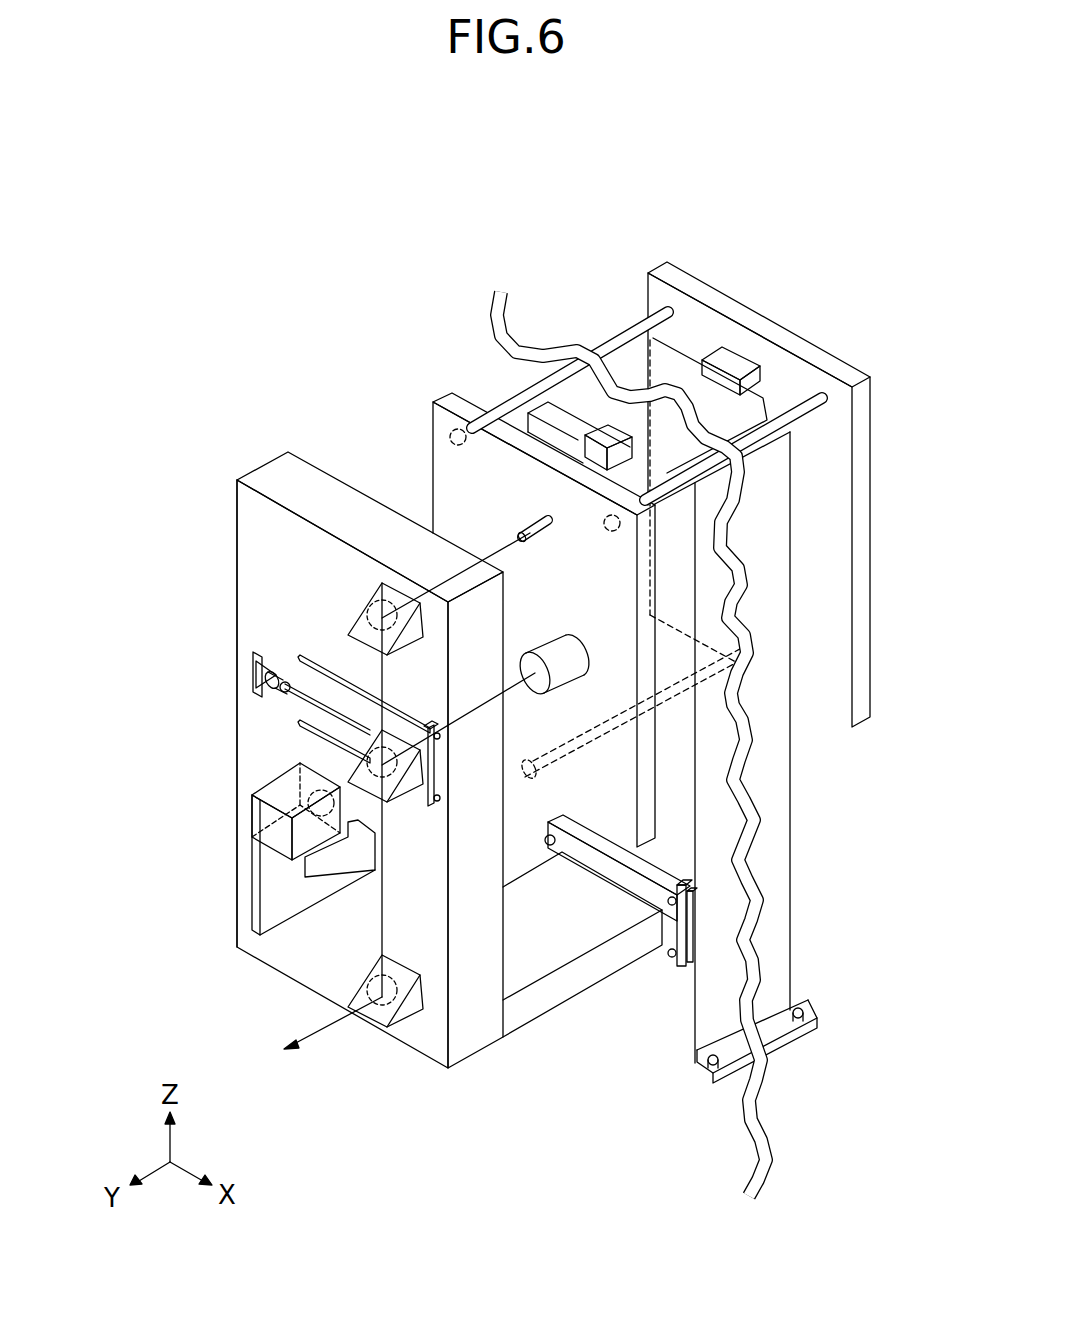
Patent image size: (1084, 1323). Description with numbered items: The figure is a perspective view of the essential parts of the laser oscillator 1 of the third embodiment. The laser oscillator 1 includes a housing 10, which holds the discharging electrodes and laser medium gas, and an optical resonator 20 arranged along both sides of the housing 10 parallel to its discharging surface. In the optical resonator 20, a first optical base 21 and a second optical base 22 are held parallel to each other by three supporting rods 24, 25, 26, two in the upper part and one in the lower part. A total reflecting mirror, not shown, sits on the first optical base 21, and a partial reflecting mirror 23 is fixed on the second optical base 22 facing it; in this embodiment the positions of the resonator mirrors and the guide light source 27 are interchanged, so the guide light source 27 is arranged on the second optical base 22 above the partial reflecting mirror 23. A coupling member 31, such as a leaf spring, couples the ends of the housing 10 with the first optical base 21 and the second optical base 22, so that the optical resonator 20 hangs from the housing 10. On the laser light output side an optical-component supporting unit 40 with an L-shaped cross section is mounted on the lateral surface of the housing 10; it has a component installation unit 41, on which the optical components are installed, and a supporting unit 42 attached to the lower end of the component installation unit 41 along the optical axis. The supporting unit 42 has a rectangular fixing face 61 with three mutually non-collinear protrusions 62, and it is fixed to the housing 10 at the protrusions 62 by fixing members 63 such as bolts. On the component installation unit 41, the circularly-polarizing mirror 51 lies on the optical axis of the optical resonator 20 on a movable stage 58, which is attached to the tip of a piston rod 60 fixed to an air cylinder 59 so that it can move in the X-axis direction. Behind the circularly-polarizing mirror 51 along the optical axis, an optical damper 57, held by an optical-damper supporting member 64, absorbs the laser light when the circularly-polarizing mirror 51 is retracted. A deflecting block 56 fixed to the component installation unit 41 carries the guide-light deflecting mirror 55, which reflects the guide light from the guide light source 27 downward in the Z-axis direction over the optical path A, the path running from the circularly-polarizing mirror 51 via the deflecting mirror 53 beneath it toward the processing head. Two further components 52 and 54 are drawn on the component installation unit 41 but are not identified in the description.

The laser oscillator 1 is at (690, 150).
The housing 10 is at (795, 983).
The optical resonator 20 is at (695, 265).
The first optical base 21 is at (822, 347).
The second optical base 22 is at (433, 470).
The partial reflecting mirror 23 is at (562, 670).
The supporting rod 24 is at (630, 328).
The supporting rod 25 is at (800, 420).
The supporting rod 26 is at (668, 705).
The guide light source 27 is at (523, 523).
The coupling member 31 is at (728, 352).
The optical-component supporting unit 40 is at (250, 462).
The component installation unit 41 is at (237, 617).
The supporting unit 42 is at (523, 1020).
The circularly-polarizing mirror 51 is at (380, 797).
The middle prism 52 is at (352, 765).
The deflecting mirror 53 is at (368, 1013).
The lower prism 54 is at (362, 997).
The guide-light deflecting mirror 55 is at (368, 595).
The deflecting block 56 is at (370, 628).
The optical damper 57 is at (252, 855).
The movable stage 58 is at (423, 797).
The air cylinder 59 is at (256, 660).
The piston rod 60 is at (298, 697).
The rectangular fixing face 61 is at (681, 964).
The protrusions 62 is at (691, 962).
The fixing members 63 is at (666, 958).
The optical-damper supporting member 64 is at (252, 912).
The optical path A is at (380, 903).